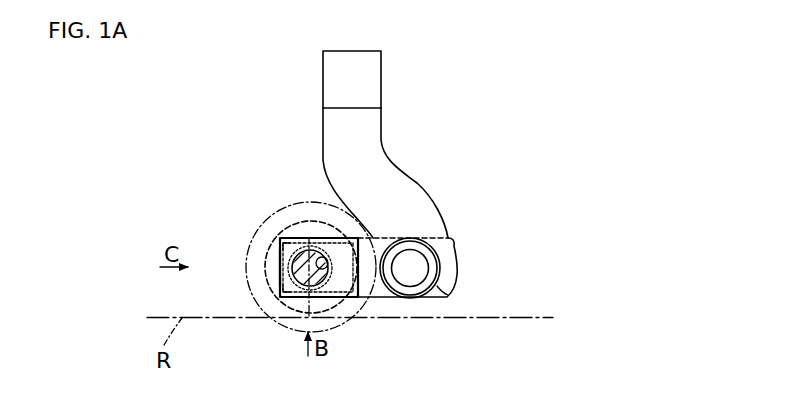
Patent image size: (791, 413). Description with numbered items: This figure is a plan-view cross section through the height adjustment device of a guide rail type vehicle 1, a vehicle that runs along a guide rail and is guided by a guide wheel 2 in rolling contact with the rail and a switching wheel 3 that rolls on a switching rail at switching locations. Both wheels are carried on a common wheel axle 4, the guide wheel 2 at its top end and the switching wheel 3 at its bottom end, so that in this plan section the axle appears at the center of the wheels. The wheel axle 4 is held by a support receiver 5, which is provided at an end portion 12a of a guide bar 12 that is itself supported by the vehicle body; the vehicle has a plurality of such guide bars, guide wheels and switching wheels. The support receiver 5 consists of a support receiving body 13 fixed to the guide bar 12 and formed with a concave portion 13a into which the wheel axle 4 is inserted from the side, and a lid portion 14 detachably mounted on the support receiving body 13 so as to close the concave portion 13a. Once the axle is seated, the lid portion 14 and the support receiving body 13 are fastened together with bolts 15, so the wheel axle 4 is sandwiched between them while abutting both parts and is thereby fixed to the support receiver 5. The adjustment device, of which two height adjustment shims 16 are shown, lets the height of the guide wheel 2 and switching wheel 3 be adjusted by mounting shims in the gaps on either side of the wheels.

The guide rail type vehicle 1 is at (434, 121).
The guide wheel 2 is at (302, 201).
The switching wheel 3 is at (296, 314).
The wheel axle 4 is at (327, 281).
The support receiver 5 is at (350, 228).
The guide bar 12 is at (447, 298).
The end portion 12a is at (370, 292).
The support receiving body 13 is at (333, 236).
The concave portion 13a is at (328, 262).
The lid portion 14 is at (279, 271).
The bolt 15 is at (279, 243).
The height adjustment shim 16 is at (333, 294).